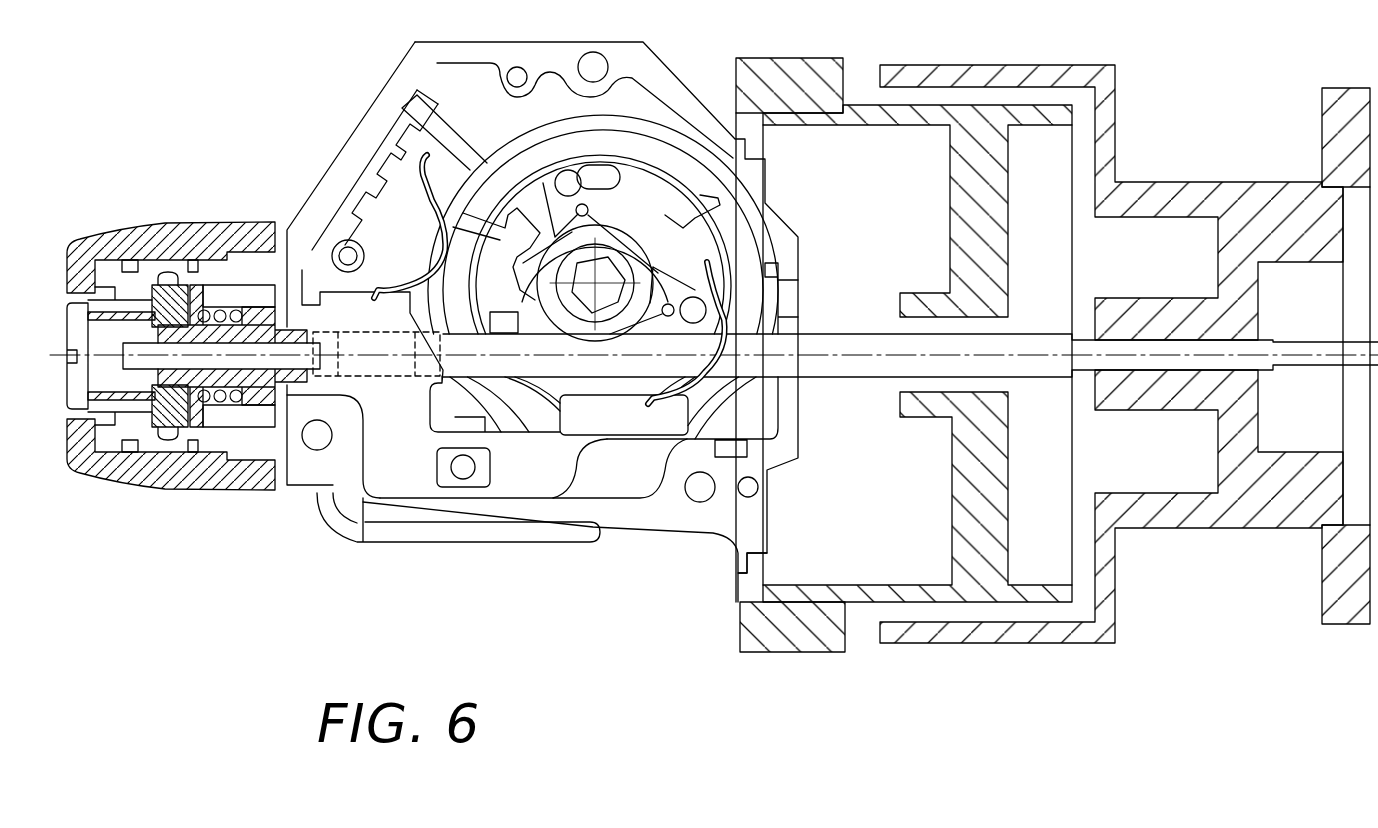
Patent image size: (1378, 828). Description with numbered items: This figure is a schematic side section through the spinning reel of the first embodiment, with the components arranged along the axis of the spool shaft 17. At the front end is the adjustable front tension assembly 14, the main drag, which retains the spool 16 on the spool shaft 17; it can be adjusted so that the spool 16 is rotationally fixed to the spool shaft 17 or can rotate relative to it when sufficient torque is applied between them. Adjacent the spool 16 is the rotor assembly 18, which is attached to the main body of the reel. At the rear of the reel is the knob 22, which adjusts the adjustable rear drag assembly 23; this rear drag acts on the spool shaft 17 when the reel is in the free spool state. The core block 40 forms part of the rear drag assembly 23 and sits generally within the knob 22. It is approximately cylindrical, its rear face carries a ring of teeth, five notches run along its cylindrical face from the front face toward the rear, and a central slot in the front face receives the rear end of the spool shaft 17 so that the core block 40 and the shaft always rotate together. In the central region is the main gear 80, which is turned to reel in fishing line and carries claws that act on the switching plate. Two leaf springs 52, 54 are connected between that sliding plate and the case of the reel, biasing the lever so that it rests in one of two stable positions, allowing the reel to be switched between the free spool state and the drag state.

The adjustable front tension assembly 14 is at (1290, 410).
The spool 16 is at (1200, 520).
The spool shaft 17 is at (840, 347).
The rotor assembly 18 is at (818, 637).
The knob 22 is at (215, 467).
The adjustable rear drag assembly 23 is at (157, 433).
The core block 40 is at (260, 392).
The leaf spring 52 is at (735, 330).
The leaf spring 54 is at (400, 285).
The main gear 80 is at (612, 147).